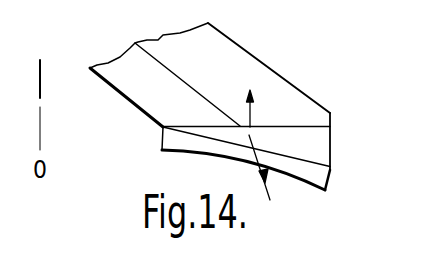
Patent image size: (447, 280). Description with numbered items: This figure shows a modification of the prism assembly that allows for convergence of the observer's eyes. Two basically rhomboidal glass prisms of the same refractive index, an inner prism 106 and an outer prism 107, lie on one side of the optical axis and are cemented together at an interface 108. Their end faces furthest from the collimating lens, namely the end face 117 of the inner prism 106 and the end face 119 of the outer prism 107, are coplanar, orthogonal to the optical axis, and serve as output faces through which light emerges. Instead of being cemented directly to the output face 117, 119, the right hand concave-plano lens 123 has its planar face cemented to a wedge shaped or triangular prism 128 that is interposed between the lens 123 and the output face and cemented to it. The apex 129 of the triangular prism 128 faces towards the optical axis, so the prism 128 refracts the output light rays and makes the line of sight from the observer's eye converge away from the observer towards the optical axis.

The inner prism 106 is at (128, 84).
The outer prism 107 is at (255, 68).
The interface 108 is at (185, 66).
The end face of inner prism 117 is at (204, 126).
The end face of outer prism 119 is at (293, 125).
The concave-plano lens 123 is at (320, 175).
The triangular prism 128 is at (322, 150).
The apex 129 is at (160, 128).